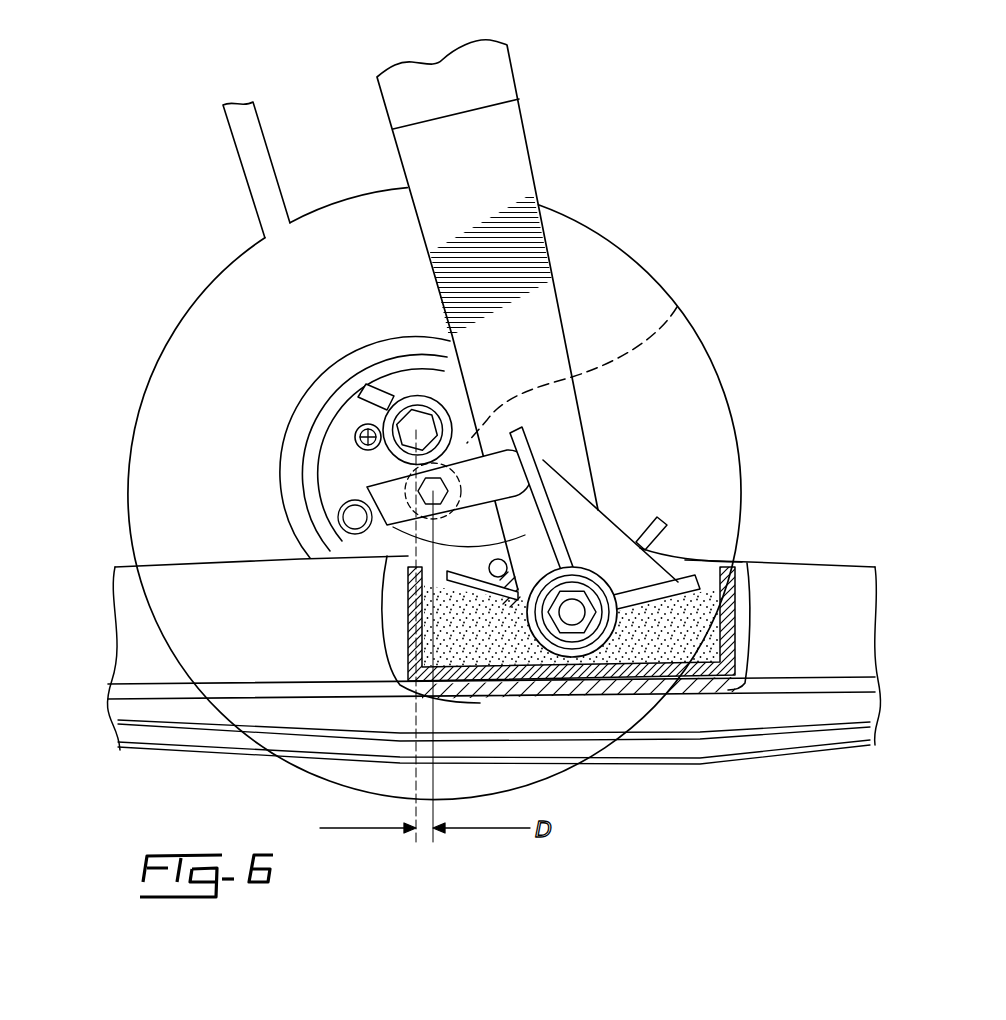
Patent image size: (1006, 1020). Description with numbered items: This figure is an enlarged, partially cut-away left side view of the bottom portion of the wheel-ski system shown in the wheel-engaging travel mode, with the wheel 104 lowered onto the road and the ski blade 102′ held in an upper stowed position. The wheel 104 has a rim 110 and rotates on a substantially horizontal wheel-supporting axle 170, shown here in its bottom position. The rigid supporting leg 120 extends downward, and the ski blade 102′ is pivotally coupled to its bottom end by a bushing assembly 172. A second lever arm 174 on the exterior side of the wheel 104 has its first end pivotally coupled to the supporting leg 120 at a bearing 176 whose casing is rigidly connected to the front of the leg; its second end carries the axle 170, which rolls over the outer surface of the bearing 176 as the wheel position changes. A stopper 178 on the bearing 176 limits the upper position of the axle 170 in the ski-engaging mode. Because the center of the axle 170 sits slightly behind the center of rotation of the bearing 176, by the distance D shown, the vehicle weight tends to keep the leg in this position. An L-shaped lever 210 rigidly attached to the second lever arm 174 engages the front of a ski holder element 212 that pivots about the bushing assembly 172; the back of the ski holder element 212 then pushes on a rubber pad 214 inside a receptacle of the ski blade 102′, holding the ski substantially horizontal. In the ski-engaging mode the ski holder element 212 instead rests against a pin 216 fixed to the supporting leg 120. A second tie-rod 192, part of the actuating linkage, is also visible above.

The wheel 104 is at (755, 363).
The second tie-rod 192 is at (247, 185).
The supporting leg 120 is at (556, 171).
The wheel-supporting axle 170 is at (677, 307).
The rim 110 is at (283, 503).
The L-shaped lever 210 is at (387, 518).
The second lever arm 174 is at (365, 485).
The stopper 178 is at (410, 402).
The bearing 176 is at (365, 387).
The ski blade 102′ is at (825, 608).
The rubber pad 214 is at (688, 647).
The ski holder element 212 is at (603, 540).
The pin 216 is at (498, 577).
The bushing assembly 172 is at (572, 615).